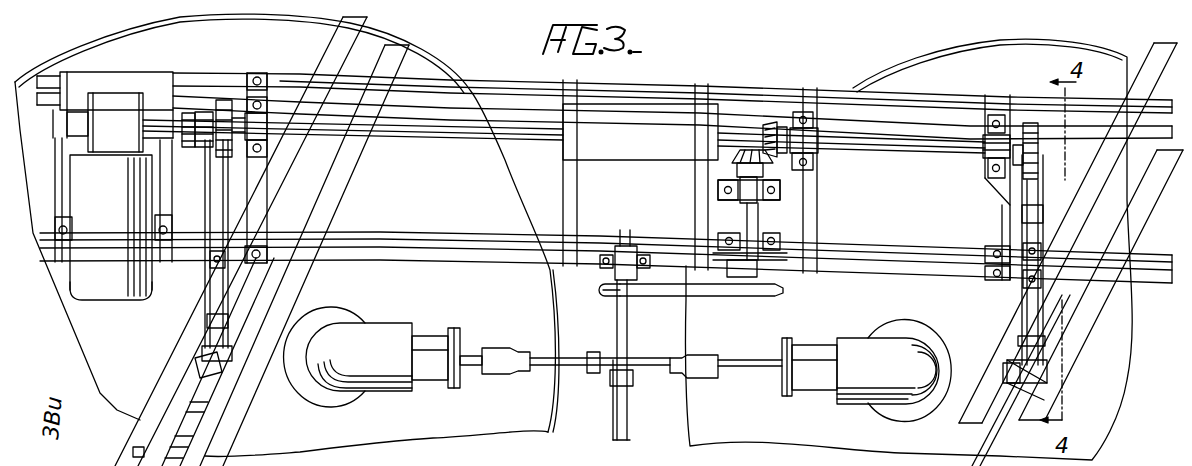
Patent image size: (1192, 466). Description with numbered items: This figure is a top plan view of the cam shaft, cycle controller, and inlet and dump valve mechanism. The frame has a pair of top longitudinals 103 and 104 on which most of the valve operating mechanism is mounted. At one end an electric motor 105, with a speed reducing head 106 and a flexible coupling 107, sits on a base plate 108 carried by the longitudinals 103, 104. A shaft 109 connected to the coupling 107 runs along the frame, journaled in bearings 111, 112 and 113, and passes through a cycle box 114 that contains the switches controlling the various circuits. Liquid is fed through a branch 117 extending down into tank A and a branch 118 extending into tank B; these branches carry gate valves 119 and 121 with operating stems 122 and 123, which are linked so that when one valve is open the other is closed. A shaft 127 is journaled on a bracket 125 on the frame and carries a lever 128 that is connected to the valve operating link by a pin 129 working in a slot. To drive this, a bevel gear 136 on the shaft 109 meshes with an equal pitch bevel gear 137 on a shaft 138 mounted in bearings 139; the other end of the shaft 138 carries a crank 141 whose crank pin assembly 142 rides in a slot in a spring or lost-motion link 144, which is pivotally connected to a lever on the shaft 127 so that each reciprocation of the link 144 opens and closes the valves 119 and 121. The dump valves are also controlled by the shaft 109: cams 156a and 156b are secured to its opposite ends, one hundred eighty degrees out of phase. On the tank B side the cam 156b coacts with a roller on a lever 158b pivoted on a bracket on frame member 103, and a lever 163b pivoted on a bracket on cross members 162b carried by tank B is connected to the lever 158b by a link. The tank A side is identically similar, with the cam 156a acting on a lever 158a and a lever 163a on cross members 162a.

The top longitudinal 103 is at (385, 236).
The top longitudinal 104 is at (434, 83).
The electric motor 105 is at (103, 293).
The speed reducing head 106 is at (110, 101).
The flexible coupling 107 is at (193, 143).
The base plate 108 is at (68, 178).
The shaft 109 is at (426, 137).
The bearing 111 is at (263, 128).
The bearing 112 is at (806, 134).
The bearing 113 is at (988, 150).
The cycle box 114 is at (600, 91).
The branch 117 is at (347, 331).
The branch 118 is at (900, 315).
The gate valve 119 is at (423, 336).
The gate valve 121 is at (810, 351).
The operating stem 122 is at (463, 356).
The operating stem 123 is at (744, 366).
The bracket 125 is at (624, 246).
The shaft 127 is at (627, 343).
The lever 128 is at (590, 373).
The pin 129 is at (598, 353).
The bevel gear 136 is at (768, 122).
The bevel gear 137 is at (735, 158).
The shaft 138 is at (748, 213).
The bearings 139 is at (775, 192).
The crank 141 is at (725, 275).
The crank pin assembly 142 is at (697, 298).
The lost-motion link 144 is at (650, 286).
The cam 156a is at (224, 100).
The cam 156b is at (1034, 128).
The lever 158a is at (208, 270).
The lever 158b is at (1019, 300).
The cross members 162a is at (219, 413).
The cross members 162b is at (1066, 361).
The lever 163a is at (157, 384).
The lever 163b is at (992, 443).